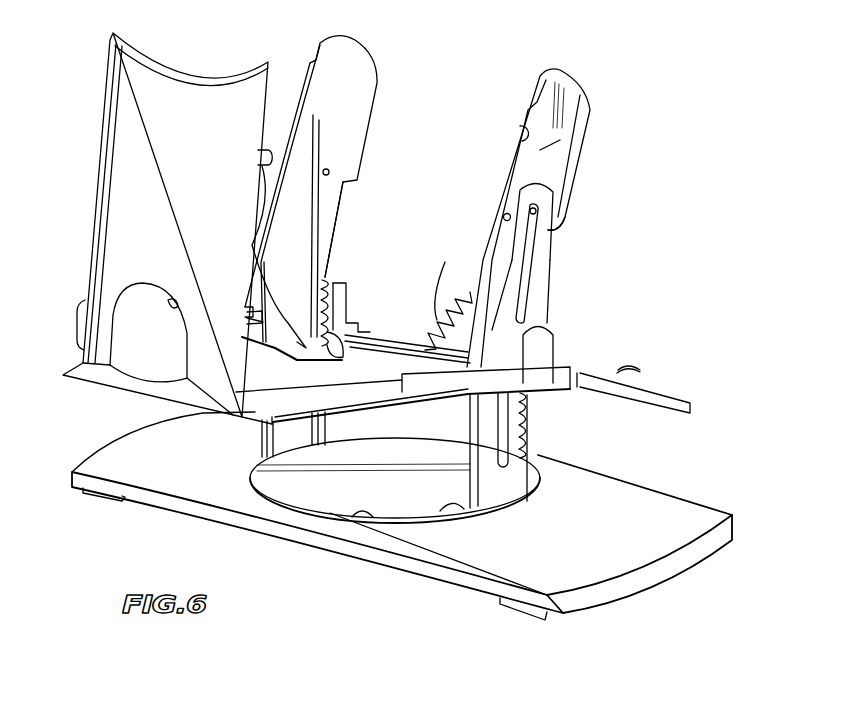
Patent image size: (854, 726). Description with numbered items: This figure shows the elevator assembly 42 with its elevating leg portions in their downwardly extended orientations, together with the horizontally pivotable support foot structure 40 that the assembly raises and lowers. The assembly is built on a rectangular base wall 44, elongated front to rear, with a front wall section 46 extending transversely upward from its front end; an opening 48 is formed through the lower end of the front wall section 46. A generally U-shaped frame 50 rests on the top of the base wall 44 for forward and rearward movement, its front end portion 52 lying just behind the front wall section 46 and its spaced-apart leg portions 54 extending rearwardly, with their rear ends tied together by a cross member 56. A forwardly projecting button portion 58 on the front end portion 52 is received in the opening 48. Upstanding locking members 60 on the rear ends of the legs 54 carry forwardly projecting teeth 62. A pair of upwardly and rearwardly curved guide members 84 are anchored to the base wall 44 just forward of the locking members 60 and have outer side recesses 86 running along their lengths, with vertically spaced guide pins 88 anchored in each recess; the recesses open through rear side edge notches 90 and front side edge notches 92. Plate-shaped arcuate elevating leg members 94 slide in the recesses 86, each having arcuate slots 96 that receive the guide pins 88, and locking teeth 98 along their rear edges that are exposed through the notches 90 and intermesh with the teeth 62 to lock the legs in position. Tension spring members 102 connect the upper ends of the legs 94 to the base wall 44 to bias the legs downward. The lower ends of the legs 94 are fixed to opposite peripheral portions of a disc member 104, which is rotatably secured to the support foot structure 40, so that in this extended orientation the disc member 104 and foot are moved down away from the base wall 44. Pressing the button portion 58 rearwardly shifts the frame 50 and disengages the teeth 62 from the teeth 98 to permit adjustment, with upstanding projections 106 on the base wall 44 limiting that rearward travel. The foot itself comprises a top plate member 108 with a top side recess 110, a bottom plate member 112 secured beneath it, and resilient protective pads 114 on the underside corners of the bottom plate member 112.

The support foot structure 40 is at (666, 510).
The elevator assembly 42 is at (617, 108).
The base wall 44 is at (612, 372).
The front wall section 46 is at (167, 228).
The opening 48 is at (176, 298).
The U-shaped frame 50 is at (342, 378).
The front end portion 52 is at (236, 380).
The leg portions 54 is at (449, 392).
The cross member 56 is at (383, 345).
The button portion 58 is at (150, 347).
The locking members 60 is at (347, 315).
The teeth 62 is at (345, 300).
The guide members 84 is at (366, 50).
The outer side recesses 86 is at (540, 150).
The guide pins 88 is at (432, 325).
The rear side edge notches 90 is at (332, 212).
The front side edge notches 92 is at (310, 75).
The elevating leg members 94 is at (280, 440).
The slots 96 is at (535, 262).
The locking teeth 98 is at (338, 358).
The tension spring members 102 is at (263, 180).
The disc member 104 is at (470, 510).
The upstanding projections 106 is at (582, 378).
The top plate member 108 is at (623, 563).
The top side recess 110 is at (372, 520).
The bottom plate member 112 is at (478, 583).
The resilient protective pads 114 is at (98, 500).